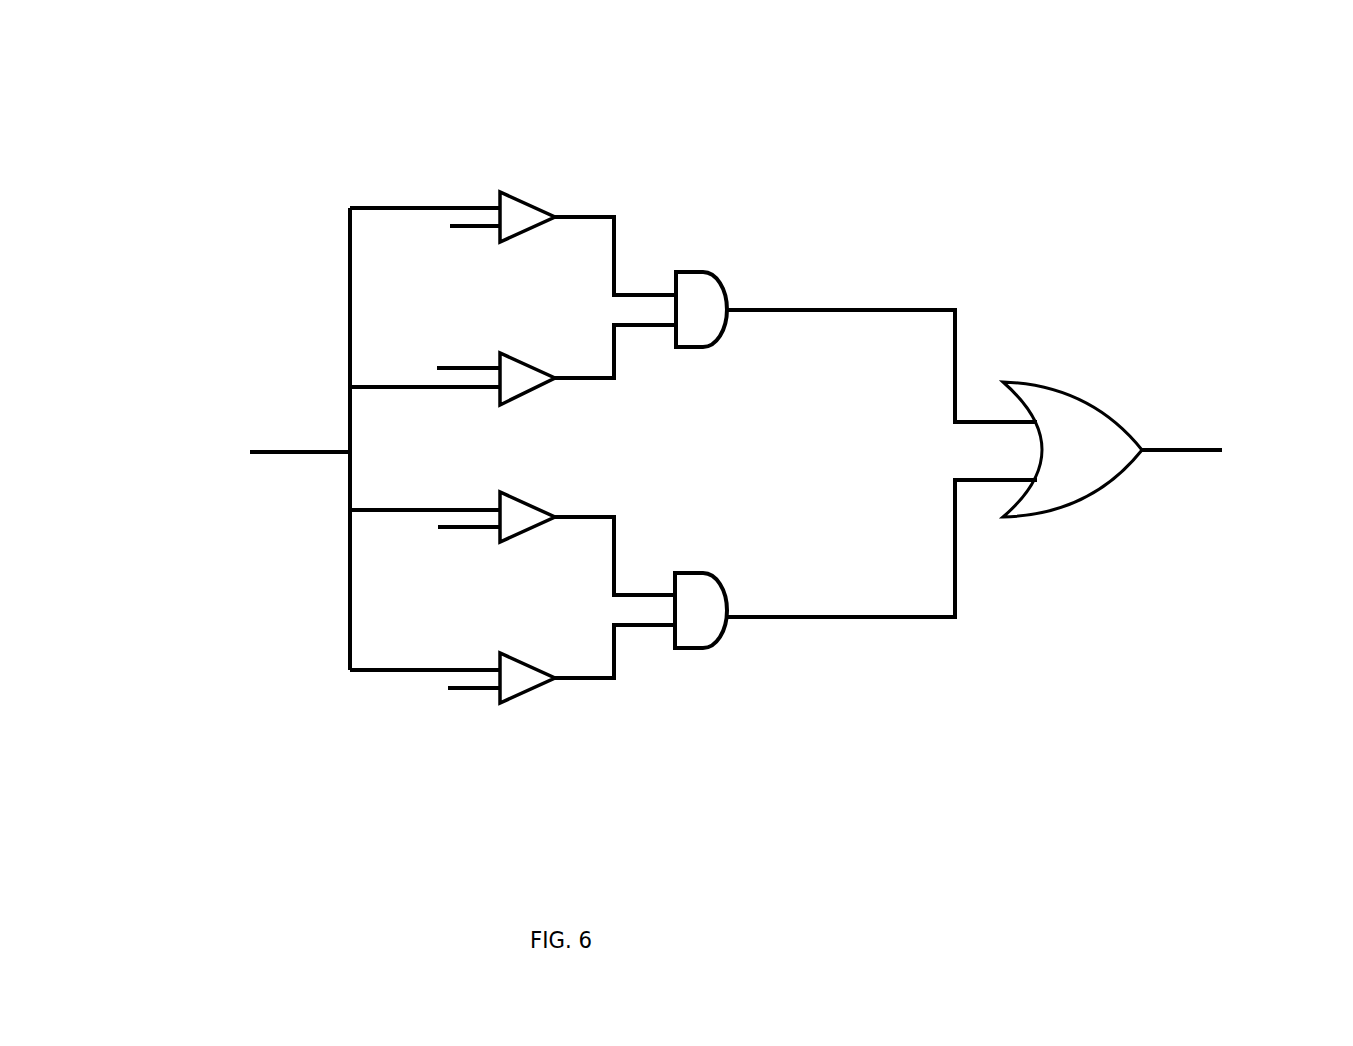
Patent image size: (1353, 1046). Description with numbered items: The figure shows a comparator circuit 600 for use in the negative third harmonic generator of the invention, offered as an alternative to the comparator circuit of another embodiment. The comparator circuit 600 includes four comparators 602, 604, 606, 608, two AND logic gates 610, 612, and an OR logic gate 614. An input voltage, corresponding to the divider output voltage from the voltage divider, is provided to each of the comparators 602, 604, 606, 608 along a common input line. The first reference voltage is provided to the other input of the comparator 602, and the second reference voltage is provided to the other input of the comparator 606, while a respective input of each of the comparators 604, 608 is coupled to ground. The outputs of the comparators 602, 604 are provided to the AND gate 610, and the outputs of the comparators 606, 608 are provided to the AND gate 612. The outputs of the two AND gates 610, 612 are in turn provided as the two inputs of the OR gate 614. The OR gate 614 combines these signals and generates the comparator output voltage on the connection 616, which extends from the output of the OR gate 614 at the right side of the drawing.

The comparator circuit 600 is at (245, 108).
The comparator 602 is at (518, 200).
The comparator 604 is at (517, 362).
The comparator 606 is at (520, 502).
The comparator 608 is at (518, 660).
The AND logic gate 610 is at (688, 270).
The AND logic gate 612 is at (693, 572).
The OR logic gate 614 is at (1067, 395).
The connection 616 is at (1180, 450).